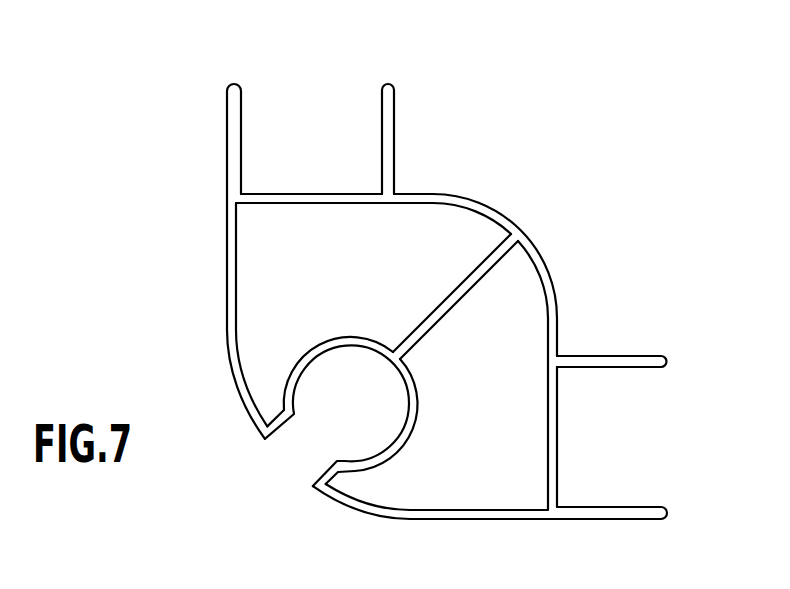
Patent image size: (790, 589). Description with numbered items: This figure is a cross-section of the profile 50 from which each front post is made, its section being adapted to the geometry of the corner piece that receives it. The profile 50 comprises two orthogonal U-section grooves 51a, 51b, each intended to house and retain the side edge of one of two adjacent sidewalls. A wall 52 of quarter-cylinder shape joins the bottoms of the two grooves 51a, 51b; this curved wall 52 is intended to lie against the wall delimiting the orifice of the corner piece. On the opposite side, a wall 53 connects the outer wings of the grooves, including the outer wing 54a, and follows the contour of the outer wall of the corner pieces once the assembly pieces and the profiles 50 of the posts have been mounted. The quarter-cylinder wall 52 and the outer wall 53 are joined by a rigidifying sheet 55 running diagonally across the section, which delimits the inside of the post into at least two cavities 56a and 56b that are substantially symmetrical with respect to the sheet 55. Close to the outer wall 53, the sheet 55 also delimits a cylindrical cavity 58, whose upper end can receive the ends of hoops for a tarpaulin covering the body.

The profile 50 is at (552, 248).
The U-section groove 51a is at (617, 432).
The U-section groove 51b is at (333, 148).
The wall of quarter-cylinder shape 52 is at (513, 233).
The wall 53 is at (233, 356).
The outer wing 54a is at (238, 152).
The rigidifying sheet 55 is at (440, 314).
The cavity 56a is at (511, 457).
The cavity 56b is at (357, 266).
The cylindrical cavity 58 is at (337, 416).